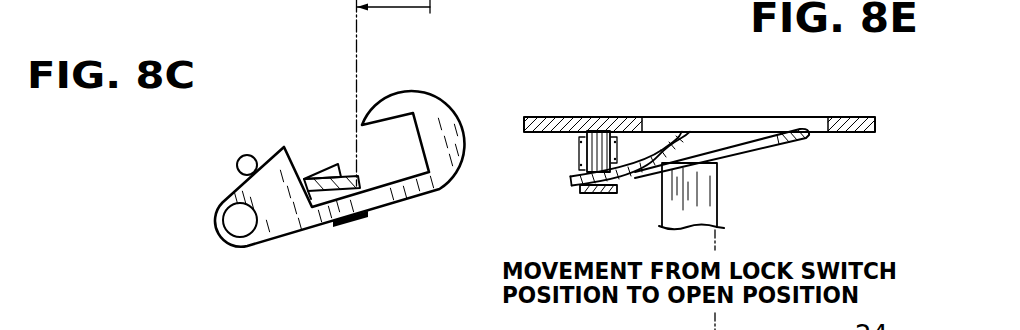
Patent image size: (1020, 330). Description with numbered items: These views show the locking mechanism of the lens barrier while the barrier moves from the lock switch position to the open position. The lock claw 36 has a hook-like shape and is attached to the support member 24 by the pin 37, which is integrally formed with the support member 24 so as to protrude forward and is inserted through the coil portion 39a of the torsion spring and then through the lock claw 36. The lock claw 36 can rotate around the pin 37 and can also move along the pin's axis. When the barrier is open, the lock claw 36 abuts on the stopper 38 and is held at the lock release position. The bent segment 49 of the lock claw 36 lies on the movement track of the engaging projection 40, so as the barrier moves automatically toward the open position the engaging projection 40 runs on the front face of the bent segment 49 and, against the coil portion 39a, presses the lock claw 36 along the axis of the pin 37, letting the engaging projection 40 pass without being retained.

In FIG. 8E, the support member 24 is at (633, 107).
In FIG. 8C, the lock claw 36 is at (452, 92).
In FIG. 8E, the lock claw 36 is at (808, 152).
In FIG. 8C, the pin 37 is at (238, 228).
In FIG. 8E, the pin 37 is at (605, 197).
In FIG. 8C, the stopper 38 is at (246, 155).
In FIG. 8E, the coil portion 39a is at (580, 153).
In FIG. 8C, the engaging projection 40 is at (352, 177).
In FIG. 8E, the engaging projection 40 is at (707, 192).
In FIG. 8C, the bent segment 49 is at (329, 165).
In FIG. 8E, the bent segment 49 is at (685, 128).